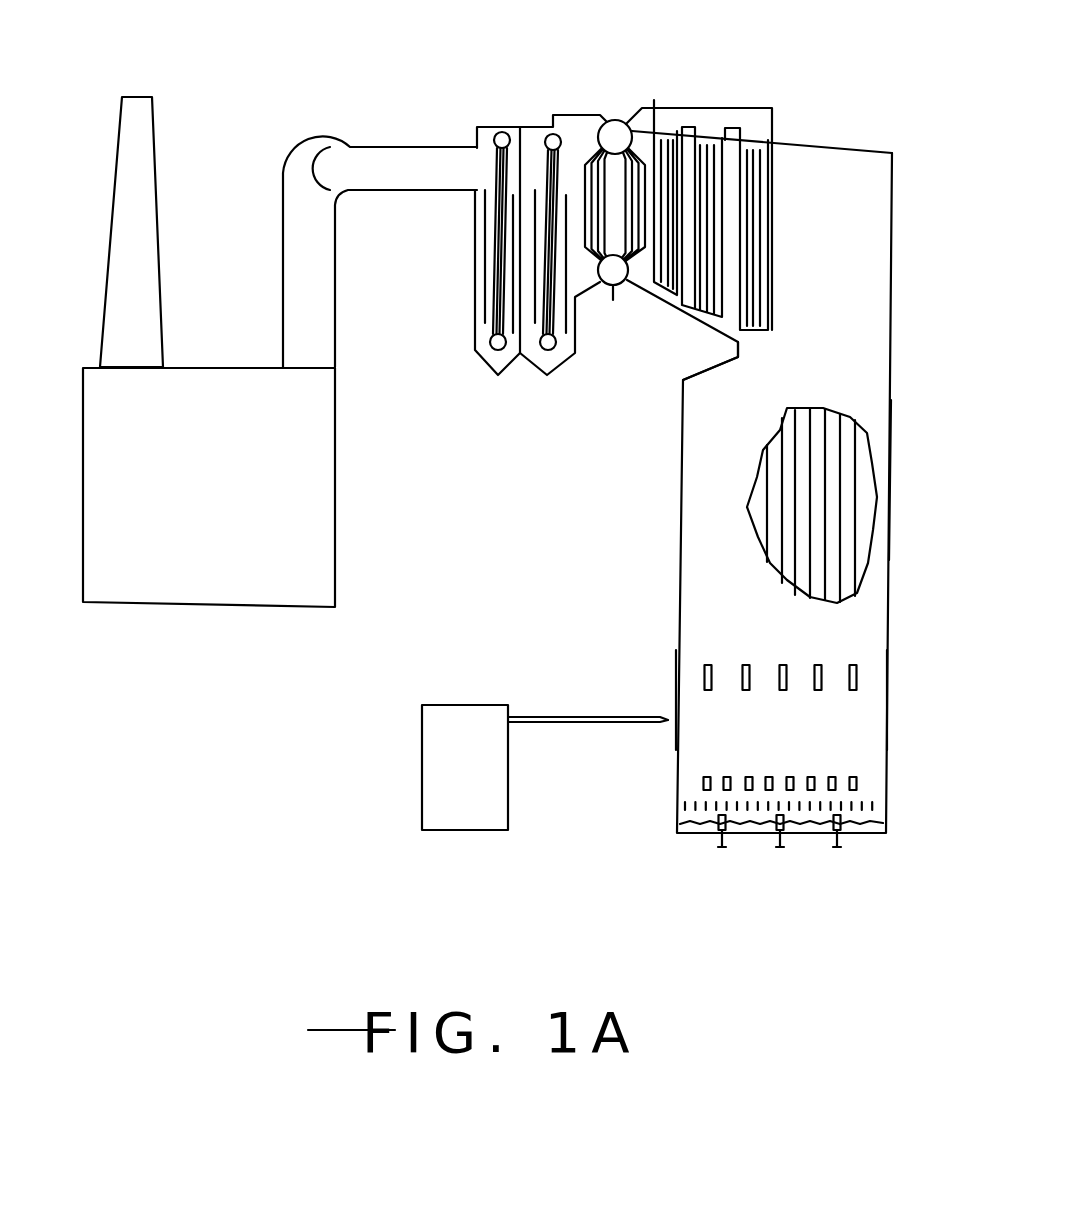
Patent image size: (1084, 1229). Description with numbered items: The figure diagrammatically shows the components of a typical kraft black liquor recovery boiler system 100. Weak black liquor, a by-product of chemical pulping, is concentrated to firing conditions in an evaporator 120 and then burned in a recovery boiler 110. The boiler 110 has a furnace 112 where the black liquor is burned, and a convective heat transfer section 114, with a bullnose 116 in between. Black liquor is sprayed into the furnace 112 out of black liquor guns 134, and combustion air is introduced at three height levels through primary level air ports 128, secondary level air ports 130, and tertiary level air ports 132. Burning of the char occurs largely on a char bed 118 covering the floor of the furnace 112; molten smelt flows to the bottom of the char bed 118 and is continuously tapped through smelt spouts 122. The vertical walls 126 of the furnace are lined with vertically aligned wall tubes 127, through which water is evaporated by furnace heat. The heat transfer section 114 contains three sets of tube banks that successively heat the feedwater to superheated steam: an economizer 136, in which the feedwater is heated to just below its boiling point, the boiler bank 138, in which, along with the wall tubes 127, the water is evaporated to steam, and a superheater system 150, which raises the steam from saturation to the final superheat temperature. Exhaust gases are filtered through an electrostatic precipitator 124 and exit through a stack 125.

The kraft black liquor recovery boiler system 100 is at (845, 108).
The recovery boiler 110 is at (893, 268).
The furnace 112 is at (892, 540).
The convective heat transfer section 114 is at (893, 198).
The bullnose 116 is at (733, 352).
The char bed 118 is at (867, 827).
The evaporator 120 is at (487, 705).
The smelt spouts 122 is at (717, 831).
The electrostatic precipitator 124 is at (122, 602).
The stack 125 is at (155, 125).
The vertical walls 126 is at (860, 477).
The wall tubes 127 is at (840, 427).
The primary level air ports 128 is at (850, 808).
The secondary level air ports 130 is at (810, 775).
The tertiary level air ports 132 is at (858, 670).
The black liquor guns 134 is at (872, 737).
The economizer 136 is at (548, 112).
The boiler bank 138 is at (617, 120).
The superheater system 150 is at (730, 110).